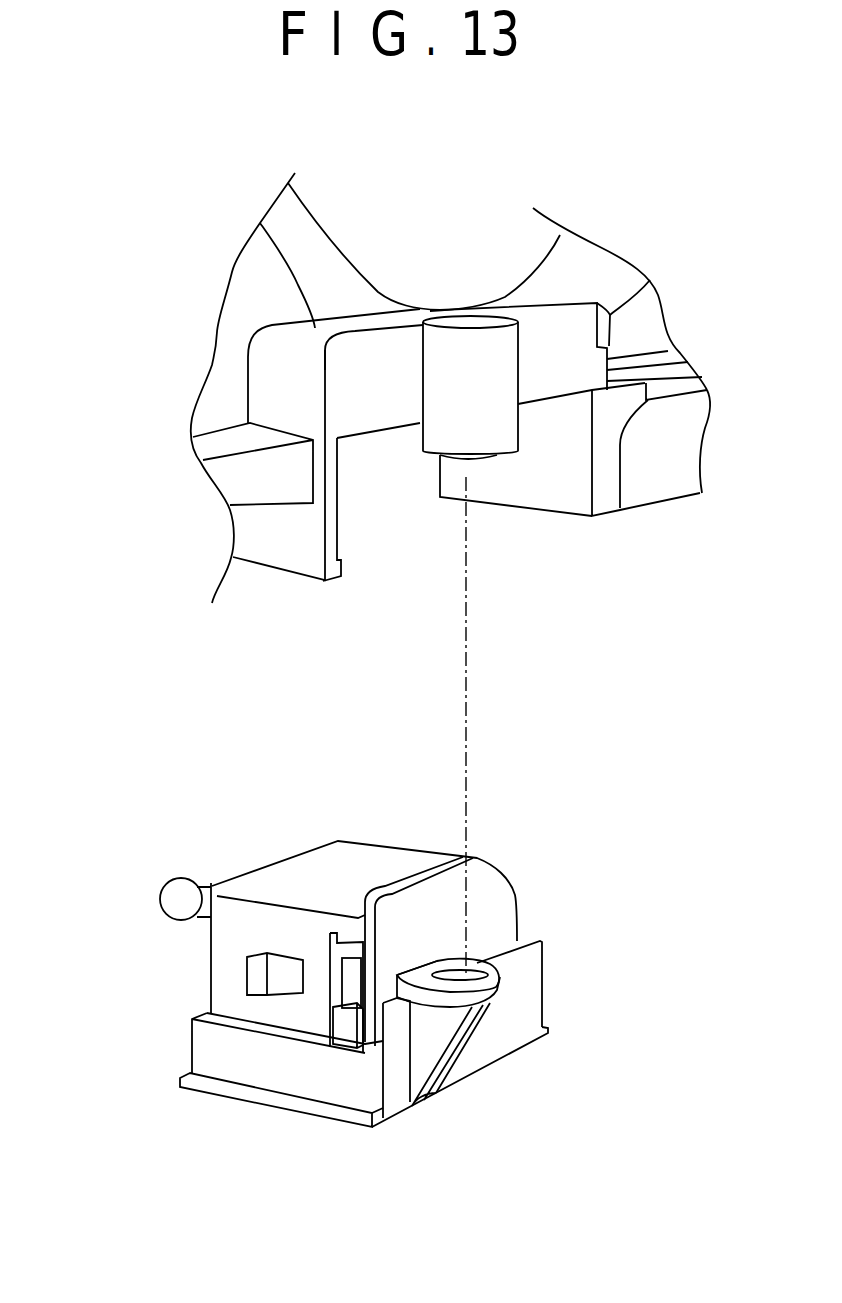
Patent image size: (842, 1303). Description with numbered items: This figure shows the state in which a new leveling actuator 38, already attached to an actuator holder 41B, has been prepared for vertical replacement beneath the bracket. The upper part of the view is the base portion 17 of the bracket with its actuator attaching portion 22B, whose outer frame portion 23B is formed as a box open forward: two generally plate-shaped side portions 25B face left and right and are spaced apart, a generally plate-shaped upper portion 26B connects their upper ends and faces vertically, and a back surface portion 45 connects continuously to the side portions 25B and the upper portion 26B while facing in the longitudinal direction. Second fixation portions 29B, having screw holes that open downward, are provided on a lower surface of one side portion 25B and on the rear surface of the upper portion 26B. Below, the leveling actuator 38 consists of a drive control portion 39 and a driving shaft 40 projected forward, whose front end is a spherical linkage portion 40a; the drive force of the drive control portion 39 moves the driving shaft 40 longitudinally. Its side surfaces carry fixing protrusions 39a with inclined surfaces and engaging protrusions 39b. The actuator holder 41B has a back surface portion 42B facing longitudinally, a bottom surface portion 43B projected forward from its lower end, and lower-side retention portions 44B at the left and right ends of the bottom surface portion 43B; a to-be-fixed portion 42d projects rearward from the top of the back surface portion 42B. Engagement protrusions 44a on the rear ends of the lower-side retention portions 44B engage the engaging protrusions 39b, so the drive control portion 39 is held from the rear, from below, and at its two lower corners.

The base portion 17 is at (243, 290).
The outer frame portion 23B is at (345, 314).
The actuator attaching portion 22B is at (473, 304).
The upper portion 26B is at (505, 302).
The back surface portion 45 is at (377, 408).
The second fixation portion 29B is at (504, 430).
The side portion 25B is at (335, 527).
The leveling actuator 38 is at (327, 850).
The drive control portion 39 is at (375, 858).
The driving shaft 40 is at (216, 882).
The spherical linkage portion 40a is at (177, 880).
The fixing protrusion 39a is at (257, 983).
The engaging protrusion 39b is at (333, 977).
The engagement protrusion 44a is at (345, 1020).
The lower-side retention portion 44B is at (203, 1010).
The bottom surface portion 43B is at (213, 1090).
The actuator holder 41B is at (523, 1010).
The back surface portion 42B is at (535, 967).
The to-be-fixed portion 42d is at (497, 992).